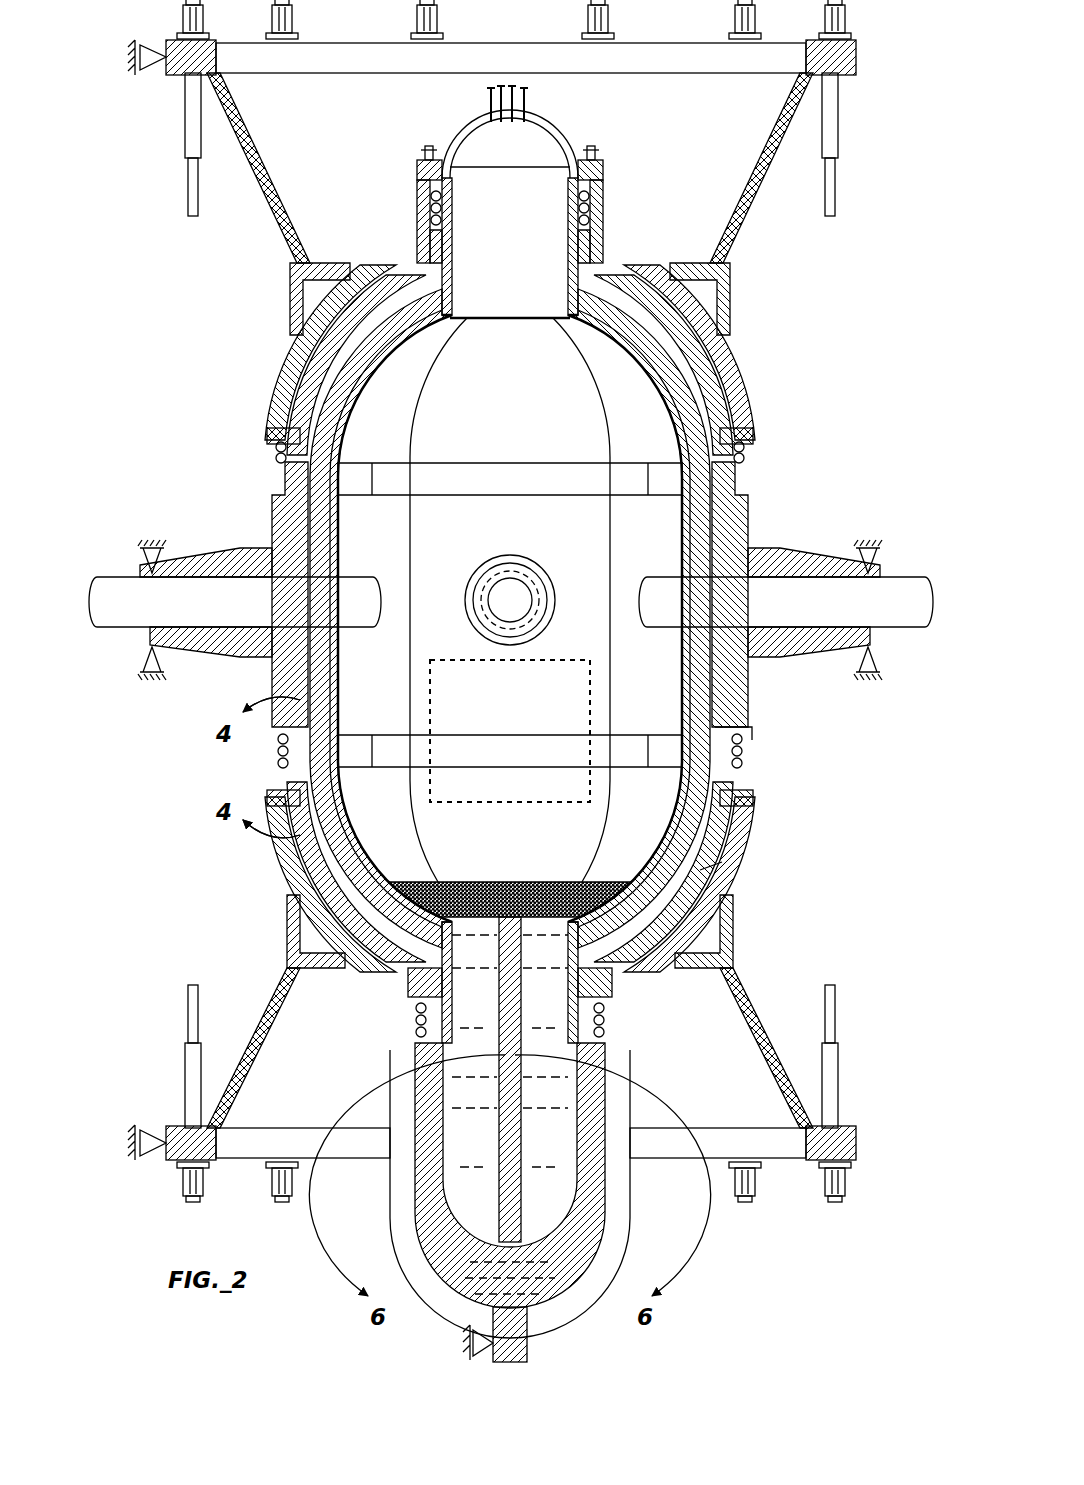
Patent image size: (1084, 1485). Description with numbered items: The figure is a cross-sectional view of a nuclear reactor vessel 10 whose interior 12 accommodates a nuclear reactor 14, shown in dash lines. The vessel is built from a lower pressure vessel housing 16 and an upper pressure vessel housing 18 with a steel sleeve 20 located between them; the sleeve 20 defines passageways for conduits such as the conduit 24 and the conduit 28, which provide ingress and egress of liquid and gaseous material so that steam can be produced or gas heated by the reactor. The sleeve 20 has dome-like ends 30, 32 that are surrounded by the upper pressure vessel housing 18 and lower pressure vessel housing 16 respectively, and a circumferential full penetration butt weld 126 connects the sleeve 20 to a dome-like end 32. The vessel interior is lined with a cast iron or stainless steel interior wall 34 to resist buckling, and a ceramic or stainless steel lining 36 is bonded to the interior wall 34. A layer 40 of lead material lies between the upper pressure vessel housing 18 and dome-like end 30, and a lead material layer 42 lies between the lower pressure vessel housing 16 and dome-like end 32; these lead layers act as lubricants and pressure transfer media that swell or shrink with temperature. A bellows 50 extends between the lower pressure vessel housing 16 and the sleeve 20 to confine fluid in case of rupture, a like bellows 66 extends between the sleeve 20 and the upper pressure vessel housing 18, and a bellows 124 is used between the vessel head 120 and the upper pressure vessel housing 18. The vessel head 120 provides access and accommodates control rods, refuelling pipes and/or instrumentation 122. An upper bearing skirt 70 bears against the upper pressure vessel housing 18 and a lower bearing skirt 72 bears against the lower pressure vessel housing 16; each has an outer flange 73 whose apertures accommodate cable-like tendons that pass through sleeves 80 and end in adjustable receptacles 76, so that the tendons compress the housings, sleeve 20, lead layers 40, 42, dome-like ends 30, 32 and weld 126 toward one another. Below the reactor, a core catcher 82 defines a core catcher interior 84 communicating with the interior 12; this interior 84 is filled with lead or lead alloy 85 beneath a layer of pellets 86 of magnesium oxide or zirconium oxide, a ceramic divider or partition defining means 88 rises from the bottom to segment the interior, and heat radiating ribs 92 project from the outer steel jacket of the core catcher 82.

The nuclear reactor vessel 10 is at (170, 300).
The interior 12 is at (660, 437).
The nuclear reactor 14 is at (560, 660).
The lower pressure vessel housing 16 is at (742, 800).
The upper pressure vessel housing 18 is at (282, 390).
The sleeve 20 is at (754, 530).
The conduit 24 is at (116, 577).
The conduit 28 is at (902, 577).
The dome-like end 30 is at (300, 420).
The dome-like end 32 is at (722, 862).
The interior wall 34 is at (338, 535).
The lining 36 is at (367, 382).
The layer of lead material 40 is at (745, 385).
The lead material layer 42 is at (290, 862).
The bellows 50 is at (726, 737).
The bellows 66 is at (276, 470).
The upper bearing skirt 70 is at (765, 208).
The lower bearing skirt 72 is at (390, 990).
The outer flange 73 is at (626, 43).
The receptacle 76 is at (294, 20).
The sleeve 80 is at (842, 120).
The core catcher 82 is at (532, 1348).
The core catcher interior 84 is at (470, 1250).
The lead or lead alloy 85 is at (510, 1051).
The layer of pellets 86 is at (518, 882).
The divider or partition defining means 88 is at (498, 1160).
The heat radiating ribs 92 is at (582, 1318).
The vessel head 120 is at (556, 122).
The instrumentation 122 is at (484, 101).
The bellows 124 is at (415, 212).
The full penetration butt weld 126 is at (300, 485).